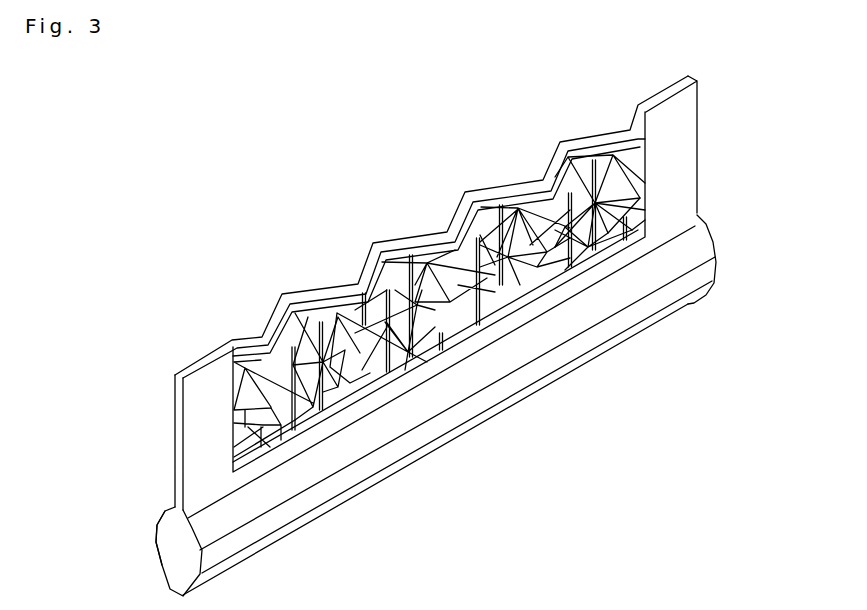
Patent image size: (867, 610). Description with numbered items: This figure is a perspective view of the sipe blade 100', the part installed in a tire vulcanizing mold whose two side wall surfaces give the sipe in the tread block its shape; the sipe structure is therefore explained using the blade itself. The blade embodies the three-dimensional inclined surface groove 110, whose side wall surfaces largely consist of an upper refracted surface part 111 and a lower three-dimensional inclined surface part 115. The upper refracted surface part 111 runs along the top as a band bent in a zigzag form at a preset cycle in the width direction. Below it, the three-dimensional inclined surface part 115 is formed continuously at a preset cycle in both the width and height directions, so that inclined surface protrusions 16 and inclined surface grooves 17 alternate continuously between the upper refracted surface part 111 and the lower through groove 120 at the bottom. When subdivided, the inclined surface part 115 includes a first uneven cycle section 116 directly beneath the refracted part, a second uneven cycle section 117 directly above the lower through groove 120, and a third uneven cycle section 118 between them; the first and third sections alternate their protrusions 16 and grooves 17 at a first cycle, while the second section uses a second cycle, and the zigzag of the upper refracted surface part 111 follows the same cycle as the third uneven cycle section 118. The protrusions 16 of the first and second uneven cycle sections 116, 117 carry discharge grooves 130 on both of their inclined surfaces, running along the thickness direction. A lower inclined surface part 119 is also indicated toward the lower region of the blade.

The sipe blade 100' is at (98, 513).
The three-dimensional inclined surface groove 110 is at (792, 137).
The upper refracted surface part 111 is at (632, 142).
The three-dimensional inclined surface part 115 is at (640, 207).
The lower through groove 120 is at (698, 240).
The discharge groove 130 is at (582, 134).
The inclined surface protrusion 16 is at (498, 226).
The inclined surface groove 17 is at (380, 287).
The first uneven cycle section 116 is at (596, 250).
The second uneven cycle section 117 is at (460, 296).
The third uneven cycle section 118 is at (532, 240).
The lower inclined surface part 119 is at (400, 372).